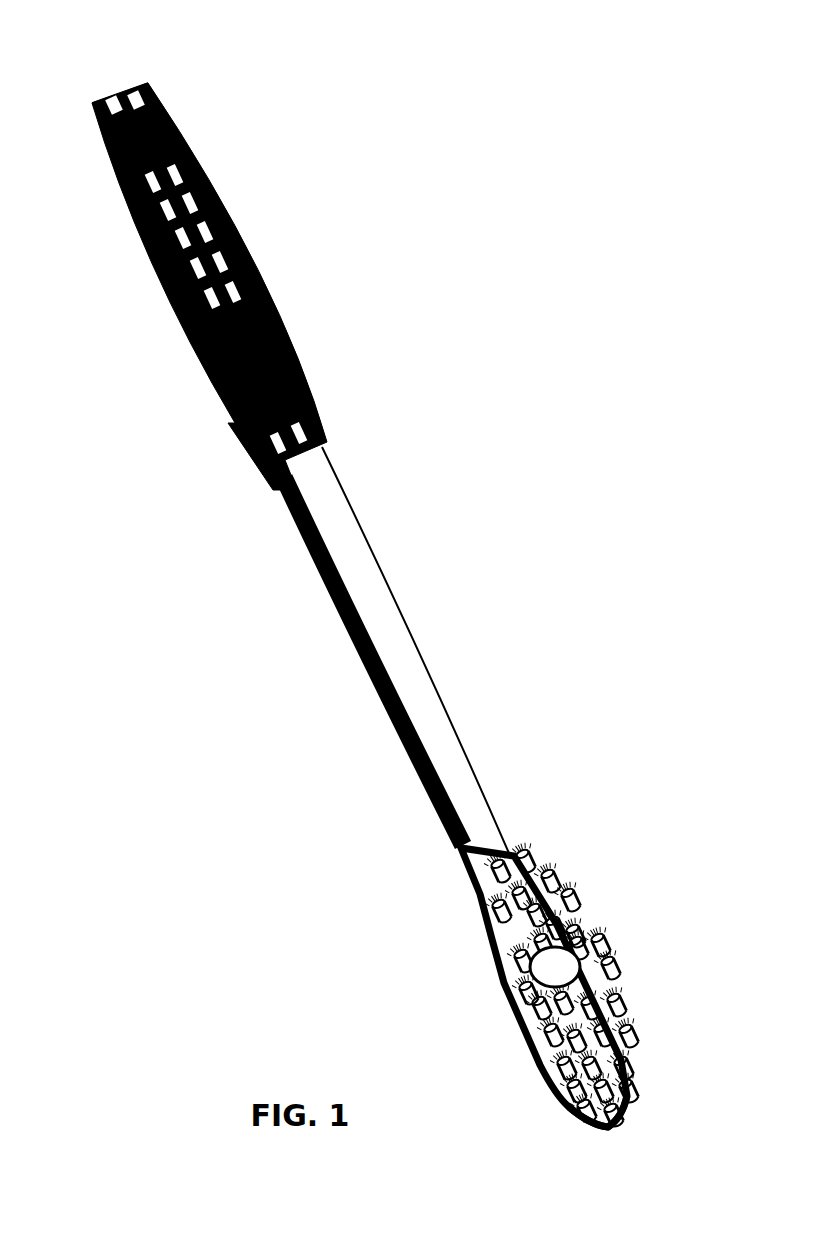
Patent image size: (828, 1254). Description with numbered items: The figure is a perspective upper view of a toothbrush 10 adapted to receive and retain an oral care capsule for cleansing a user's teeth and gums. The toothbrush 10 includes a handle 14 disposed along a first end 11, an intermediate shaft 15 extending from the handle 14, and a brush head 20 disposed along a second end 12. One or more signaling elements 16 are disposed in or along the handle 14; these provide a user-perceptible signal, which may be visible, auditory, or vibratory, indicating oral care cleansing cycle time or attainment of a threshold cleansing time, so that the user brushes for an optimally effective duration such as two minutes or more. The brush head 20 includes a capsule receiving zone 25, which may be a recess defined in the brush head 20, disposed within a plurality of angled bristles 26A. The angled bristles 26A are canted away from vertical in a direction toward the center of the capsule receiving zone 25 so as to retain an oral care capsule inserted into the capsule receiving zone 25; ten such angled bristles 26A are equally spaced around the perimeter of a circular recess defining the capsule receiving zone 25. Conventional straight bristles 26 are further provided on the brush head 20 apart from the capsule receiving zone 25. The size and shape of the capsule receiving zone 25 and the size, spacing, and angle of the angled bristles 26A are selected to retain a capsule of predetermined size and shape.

The toothbrush 10 is at (511, 361).
The first end 11 is at (118, 92).
The second end 12 is at (627, 1127).
The handle 14 is at (243, 232).
The intermediate shaft 15 is at (397, 603).
The signaling elements 16 is at (210, 300).
The brush head 20 is at (518, 1032).
The capsule receiving zone 25 is at (560, 965).
The straight bristles 26 is at (548, 872).
The angled bristles 26A is at (607, 980).